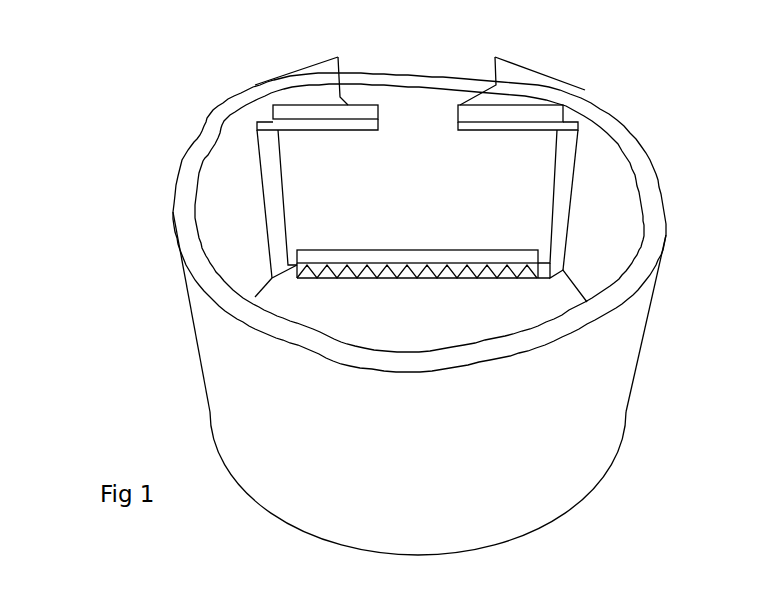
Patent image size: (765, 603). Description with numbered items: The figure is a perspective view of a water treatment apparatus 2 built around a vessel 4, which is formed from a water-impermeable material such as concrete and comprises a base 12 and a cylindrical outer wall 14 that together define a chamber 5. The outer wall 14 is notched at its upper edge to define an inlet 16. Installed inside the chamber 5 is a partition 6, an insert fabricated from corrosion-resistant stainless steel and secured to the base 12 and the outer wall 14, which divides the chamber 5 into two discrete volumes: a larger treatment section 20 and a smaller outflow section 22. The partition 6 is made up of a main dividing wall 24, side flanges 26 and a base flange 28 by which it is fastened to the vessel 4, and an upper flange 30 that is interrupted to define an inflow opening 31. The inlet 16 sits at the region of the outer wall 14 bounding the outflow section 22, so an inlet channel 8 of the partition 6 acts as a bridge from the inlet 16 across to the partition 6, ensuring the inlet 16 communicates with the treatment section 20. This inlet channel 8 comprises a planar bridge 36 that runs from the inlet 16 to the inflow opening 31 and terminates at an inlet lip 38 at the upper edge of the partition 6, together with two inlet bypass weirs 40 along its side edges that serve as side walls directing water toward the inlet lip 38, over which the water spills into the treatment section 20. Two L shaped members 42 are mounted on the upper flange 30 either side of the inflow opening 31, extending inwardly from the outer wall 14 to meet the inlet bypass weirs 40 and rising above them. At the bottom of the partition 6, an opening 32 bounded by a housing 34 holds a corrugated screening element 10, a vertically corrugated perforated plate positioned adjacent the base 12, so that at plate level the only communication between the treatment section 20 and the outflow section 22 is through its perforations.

The water treatment apparatus 2 is at (152, 329).
The vessel 4 is at (633, 347).
The chamber 5 is at (432, 329).
The partition 6 is at (438, 194).
The inlet channel 8 is at (514, 93).
The corrugated screening element 10 is at (395, 250).
The base 12 is at (275, 298).
The cylindrical outer wall 14 is at (175, 312).
The inlet 16 is at (417, 85).
The treatment section 20 is at (247, 230).
The outflow section 22 is at (250, 95).
The main dividing wall 24 is at (307, 182).
The side flanges 26 is at (270, 198).
The base flange 28 is at (545, 270).
The upper flange 30 is at (563, 118).
The inflow opening 31 is at (385, 118).
The opening 32 is at (355, 278).
The housing 34 is at (483, 262).
The planar bridge 36 is at (325, 72).
The inlet lip 38 is at (437, 122).
The inlet bypass weirs 40 is at (308, 97).
The L shaped members 42 is at (265, 152).